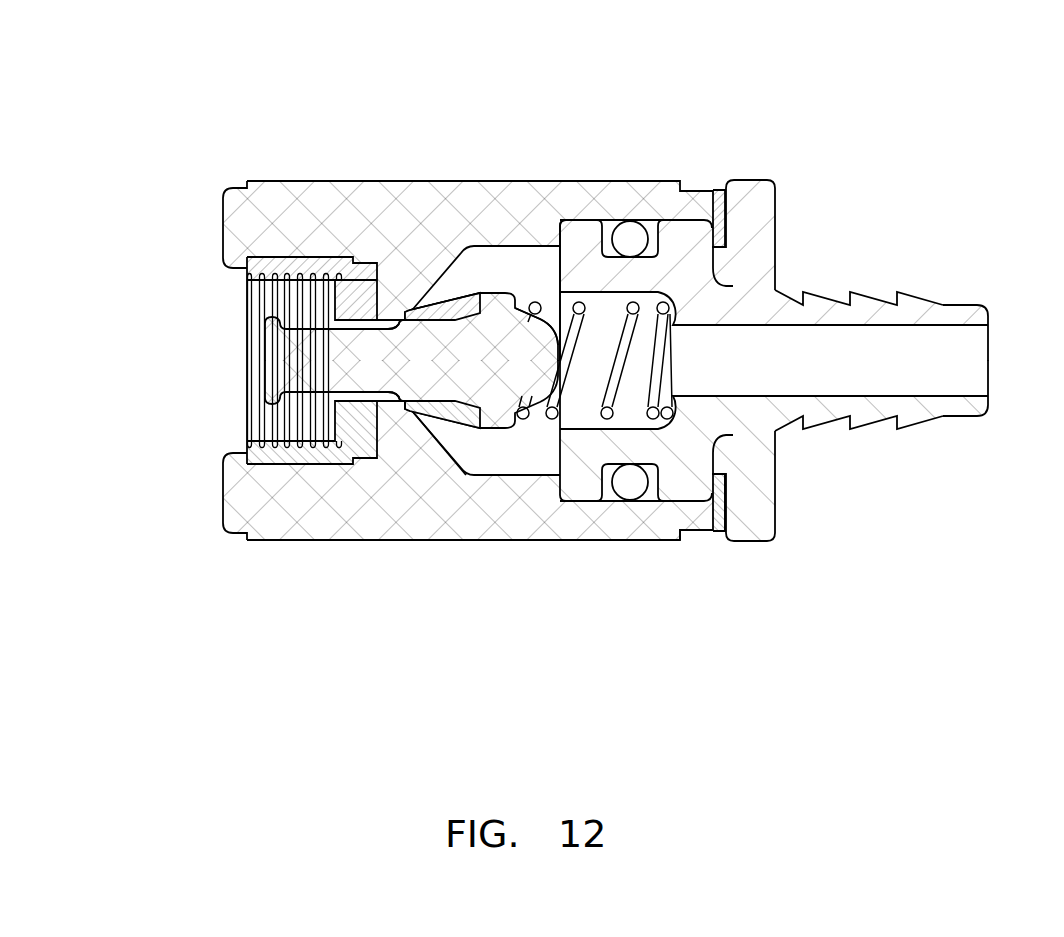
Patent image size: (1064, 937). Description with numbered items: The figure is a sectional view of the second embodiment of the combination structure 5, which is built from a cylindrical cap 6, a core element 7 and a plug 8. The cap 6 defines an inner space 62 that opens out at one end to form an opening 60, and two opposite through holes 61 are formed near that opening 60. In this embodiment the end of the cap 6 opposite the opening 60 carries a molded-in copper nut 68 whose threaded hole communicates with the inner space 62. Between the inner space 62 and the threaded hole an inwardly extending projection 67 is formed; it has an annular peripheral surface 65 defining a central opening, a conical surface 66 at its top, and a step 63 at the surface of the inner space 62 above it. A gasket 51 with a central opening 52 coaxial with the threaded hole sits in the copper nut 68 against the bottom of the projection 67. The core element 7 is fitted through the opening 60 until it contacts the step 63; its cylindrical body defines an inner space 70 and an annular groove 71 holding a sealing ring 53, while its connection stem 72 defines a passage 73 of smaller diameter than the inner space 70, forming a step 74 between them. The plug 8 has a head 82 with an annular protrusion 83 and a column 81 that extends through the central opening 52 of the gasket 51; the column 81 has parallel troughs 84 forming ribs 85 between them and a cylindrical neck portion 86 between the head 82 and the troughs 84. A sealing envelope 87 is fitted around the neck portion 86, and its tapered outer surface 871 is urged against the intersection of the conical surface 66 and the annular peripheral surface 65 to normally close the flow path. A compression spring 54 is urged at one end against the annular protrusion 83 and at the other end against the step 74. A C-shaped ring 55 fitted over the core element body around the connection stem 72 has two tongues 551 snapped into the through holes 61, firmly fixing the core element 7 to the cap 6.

The combination structure 5 is at (585, 181).
The cylindrical cap 6 is at (242, 533).
The core element 7 is at (852, 356).
The plug 8 is at (356, 355).
The gasket 51 is at (336, 299).
The central opening 52 is at (350, 323).
The sealing ring 53 is at (629, 228).
The compression spring 54 is at (503, 292).
The C-shaped ring 55 is at (725, 500).
The tongues 551 is at (718, 528).
The opening 60 is at (768, 477).
The through holes 61 is at (695, 515).
The inner space 62 is at (538, 473).
The step 63 is at (507, 477).
The annular peripheral surface 65 is at (420, 311).
The conical surface 66 is at (540, 338).
The inwardly extending projection 67 is at (394, 307).
The molded-in copper nut 68 is at (266, 257).
The inner space 70 is at (588, 420).
The annular groove 71 is at (651, 218).
The connection stem 72 is at (907, 314).
The passage 73 is at (908, 372).
The step 74 is at (662, 292).
The column 81 is at (283, 370).
The head 82 is at (430, 312).
The annular protrusion 83 is at (492, 429).
The troughs 84 is at (293, 466).
The ribs 85 is at (322, 465).
The cylindrical neck portion 86 is at (420, 406).
The sealing envelope 87 is at (438, 403).
The outer surface 871 is at (460, 403).